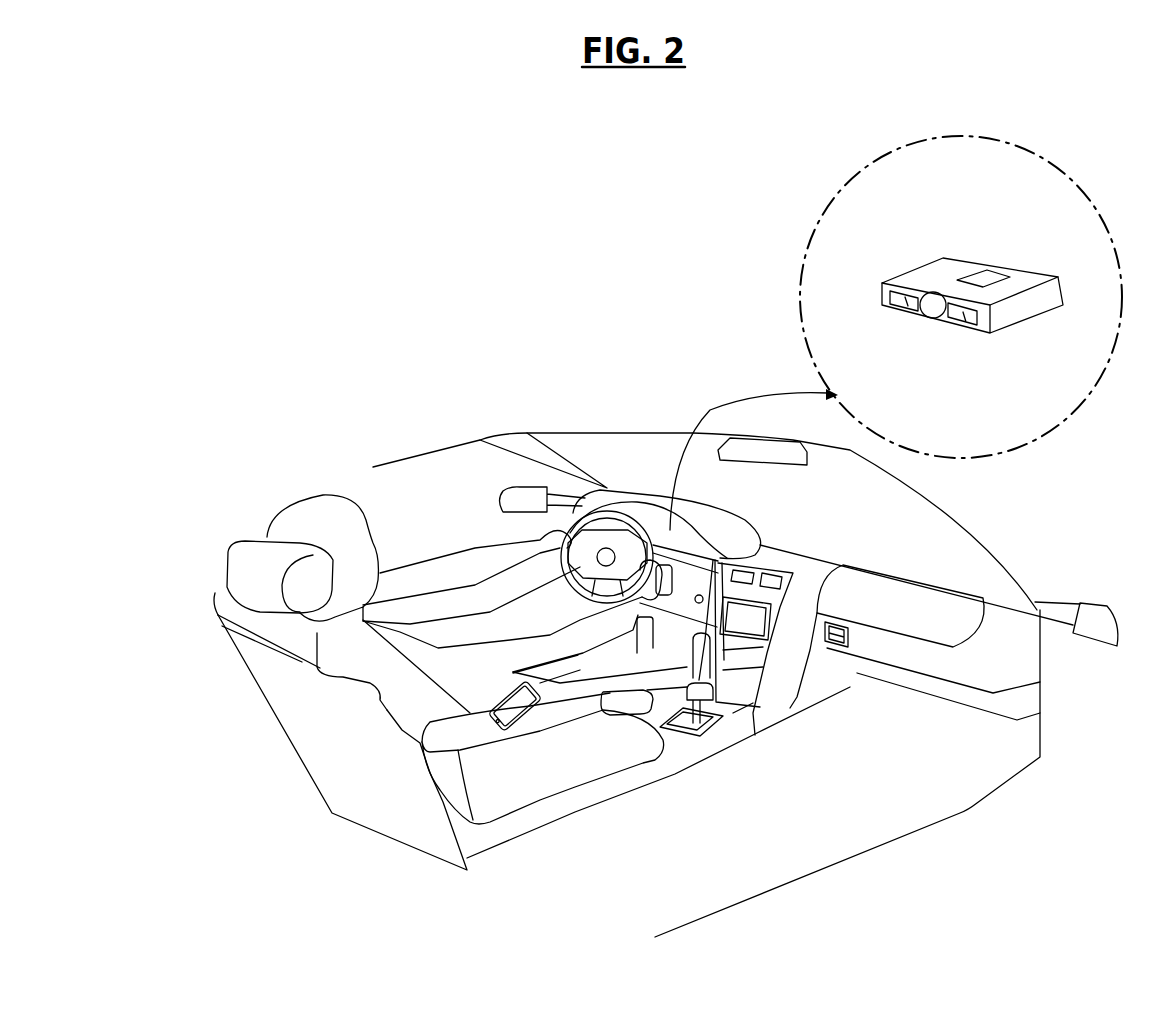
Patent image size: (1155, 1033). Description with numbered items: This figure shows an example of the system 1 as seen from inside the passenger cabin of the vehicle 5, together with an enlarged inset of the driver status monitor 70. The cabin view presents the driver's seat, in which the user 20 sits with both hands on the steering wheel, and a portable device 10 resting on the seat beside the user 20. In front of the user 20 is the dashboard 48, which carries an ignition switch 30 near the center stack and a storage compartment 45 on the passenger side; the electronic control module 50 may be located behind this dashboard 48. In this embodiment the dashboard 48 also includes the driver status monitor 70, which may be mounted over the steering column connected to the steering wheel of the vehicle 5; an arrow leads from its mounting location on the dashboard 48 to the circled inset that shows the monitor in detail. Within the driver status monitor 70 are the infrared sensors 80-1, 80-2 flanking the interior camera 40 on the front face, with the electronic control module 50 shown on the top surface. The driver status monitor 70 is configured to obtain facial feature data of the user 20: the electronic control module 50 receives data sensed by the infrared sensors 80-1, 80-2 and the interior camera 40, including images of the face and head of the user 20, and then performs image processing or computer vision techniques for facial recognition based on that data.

The system 1 is at (303, 293).
The vehicle 5 is at (527, 433).
The portable device 10 is at (495, 700).
The user 20 is at (297, 500).
The ignition switch 30 is at (699, 604).
The interior camera 40 is at (934, 320).
The storage compartment 45 is at (860, 673).
The dashboard 48 is at (810, 552).
The electronic control module 50 is at (990, 277).
The driver status monitor 70 is at (805, 256).
The infrared sensor 80-1 is at (906, 308).
The infrared sensor 80-2 is at (963, 328).